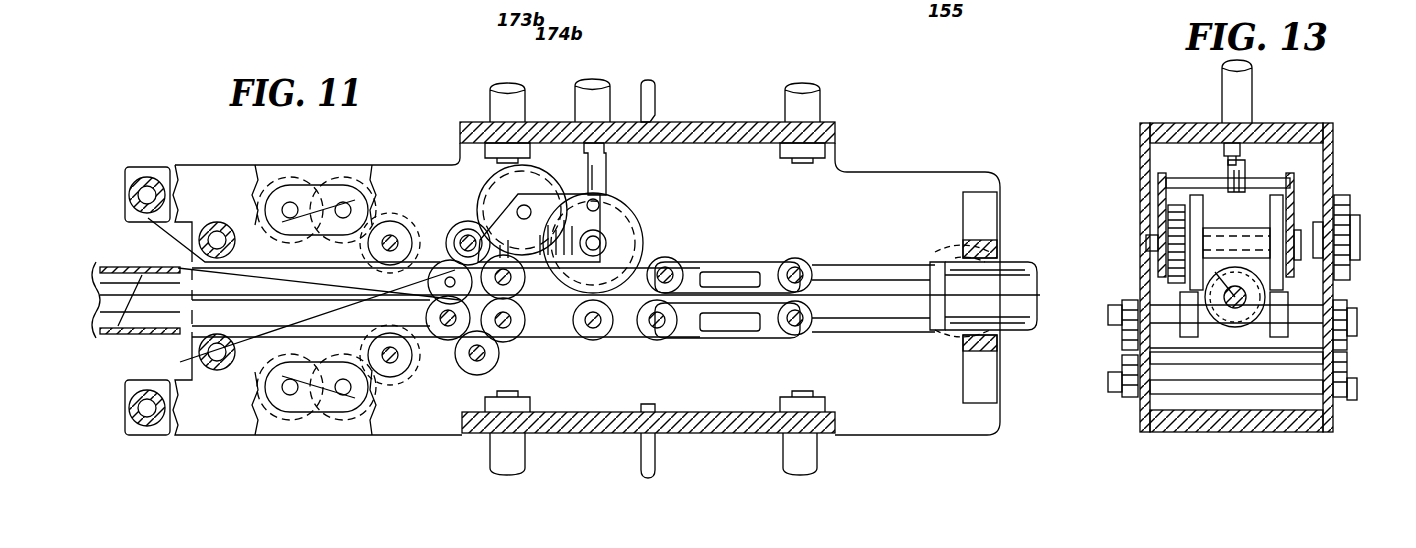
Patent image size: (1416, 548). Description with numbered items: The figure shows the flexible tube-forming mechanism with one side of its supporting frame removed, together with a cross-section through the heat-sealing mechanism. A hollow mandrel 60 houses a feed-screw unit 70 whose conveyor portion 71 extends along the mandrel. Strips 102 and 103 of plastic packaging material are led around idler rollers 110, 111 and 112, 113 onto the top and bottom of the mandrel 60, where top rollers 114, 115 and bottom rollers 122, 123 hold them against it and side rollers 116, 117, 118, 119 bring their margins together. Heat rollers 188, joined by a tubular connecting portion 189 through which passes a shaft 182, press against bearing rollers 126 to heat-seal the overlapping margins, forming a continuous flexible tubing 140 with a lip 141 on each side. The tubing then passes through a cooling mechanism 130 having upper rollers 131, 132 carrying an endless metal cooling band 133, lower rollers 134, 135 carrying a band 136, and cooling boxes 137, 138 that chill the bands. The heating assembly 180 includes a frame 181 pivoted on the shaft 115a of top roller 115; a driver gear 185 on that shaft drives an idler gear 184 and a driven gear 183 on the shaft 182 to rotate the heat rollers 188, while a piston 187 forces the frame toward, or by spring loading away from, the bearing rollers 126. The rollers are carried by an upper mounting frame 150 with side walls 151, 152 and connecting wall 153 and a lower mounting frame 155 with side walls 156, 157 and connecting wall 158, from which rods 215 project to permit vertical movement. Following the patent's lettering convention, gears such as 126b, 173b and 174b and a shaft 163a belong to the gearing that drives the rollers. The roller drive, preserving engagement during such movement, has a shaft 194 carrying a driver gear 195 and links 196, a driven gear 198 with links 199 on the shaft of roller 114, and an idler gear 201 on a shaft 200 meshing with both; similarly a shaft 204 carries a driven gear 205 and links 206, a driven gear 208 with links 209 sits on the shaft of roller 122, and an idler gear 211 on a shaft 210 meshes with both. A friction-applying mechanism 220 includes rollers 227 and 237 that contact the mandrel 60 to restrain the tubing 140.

In FIG. 11, the mandrel 60 is at (112, 266).
In FIG. 13, the mandrel 60 is at (1240, 327).
In FIG. 11, the feed-screw unit 70 is at (106, 334).
In FIG. 13, the feed-screw unit 70 is at (1248, 292).
In FIG. 11, the conveyor portion 71 is at (110, 268).
In FIG. 11, the strip 102 is at (180, 240).
In FIG. 11, the strip 103 is at (185, 340).
In FIG. 11, the first idler roller 110 is at (147, 177).
In FIG. 11, the second idler roller 111 is at (218, 222).
In FIG. 11, the idler roller 112 is at (128, 410).
In FIG. 13, the idler roller 112 is at (1240, 390).
In FIG. 11, the idler roller 113 is at (222, 370).
In FIG. 13, the idler roller 113 is at (1280, 365).
In FIG. 11, the top roller 114 is at (428, 280).
In FIG. 11, the top roller 115 is at (462, 240).
In FIG. 11, the shaft 115a is at (486, 240).
In FIG. 11, the side roller 116 is at (430, 312).
In FIG. 11, the side roller 117 is at (440, 318).
In FIG. 11, the side roller 118 is at (515, 285).
In FIG. 11, the side roller 119 is at (510, 338).
In FIG. 11, the bottom roller 122 is at (411, 402).
In FIG. 11, the bottom roller 123 is at (496, 358).
In FIG. 11, the bearing roller 126 is at (588, 340).
In FIG. 13, the bearing roller 126 is at (1296, 300).
In FIG. 13, the bearing roller gear 126b is at (1128, 302).
In FIG. 11, the cooling mechanism 130 is at (750, 250).
In FIG. 11, the roller 131 is at (668, 258).
In FIG. 11, the roller 132 is at (795, 258).
In FIG. 11, the endless metal cooling band 133 is at (826, 281).
In FIG. 11, the roller 134 is at (657, 340).
In FIG. 11, the roller 135 is at (795, 335).
In FIG. 11, the endless metal cooling band 136 is at (760, 340).
In FIG. 11, the cooling box 137 is at (732, 262).
In FIG. 11, the cooling box 138 is at (722, 333).
In FIG. 11, the flexible tubing 140 is at (912, 332).
In FIG. 11, the lip 141 is at (895, 268).
In FIG. 11, the upper mounting frame 150 is at (950, 172).
In FIG. 13, the upper mounting frame 150 is at (1334, 150).
In FIG. 13, the side wall 151 is at (1140, 162).
In FIG. 11, the side wall 152 is at (870, 178).
In FIG. 13, the side wall 152 is at (1333, 128).
In FIG. 11, the connecting wall 153 is at (836, 140).
In FIG. 13, the connecting wall 153 is at (1165, 128).
In FIG. 11, the lower mounting frame 155 is at (906, 440).
In FIG. 13, the lower mounting frame 155 is at (1138, 434).
In FIG. 13, the side wall 156 is at (1140, 418).
In FIG. 11, the side wall 157 is at (880, 420).
In FIG. 13, the side wall 157 is at (1333, 430).
In FIG. 11, the connecting wall 158 is at (655, 455).
In FIG. 13, the connecting wall 158 is at (1305, 428).
In FIG. 13, the idler gear shaft 163a is at (1340, 218).
In FIG. 13, the nut 173b is at (1124, 394).
In FIG. 13, the gear 174b is at (1126, 345).
In FIG. 11, the heating assembly 180 is at (642, 188).
In FIG. 13, the heating assembly 180 is at (1292, 165).
In FIG. 11, the frame 181 is at (548, 196).
In FIG. 13, the frame 181 is at (1295, 185).
In FIG. 13, the shaft 182 is at (1145, 240).
In FIG. 11, the driven gear 183 is at (628, 222).
In FIG. 13, the driven gear 183 is at (1158, 270).
In FIG. 11, the idler gear 184 is at (522, 180).
In FIG. 11, the driver gear 185 is at (468, 230).
In FIG. 11, the piston 187 is at (598, 150).
In FIG. 13, the piston 187 is at (1240, 150).
In FIG. 11, the heat roller 188 is at (618, 202).
In FIG. 13, the heat roller 188 is at (1222, 185).
In FIG. 13, the tubular connecting portion 189 is at (1258, 228).
In FIG. 11, the shaft 194 is at (290, 234).
In FIG. 11, the driver gear 195 is at (252, 185).
In FIG. 11, the links 196 is at (290, 190).
In FIG. 11, the driven gear 198 is at (360, 192).
In FIG. 11, the links 199 is at (343, 185).
In FIG. 11, the shaft 200 is at (376, 245).
In FIG. 11, the idler gear 201 is at (320, 196).
In FIG. 11, the shaft 204 is at (290, 366).
In FIG. 11, the driven gear 205 is at (268, 410).
In FIG. 11, the links 206 is at (310, 372).
In FIG. 11, the driven gear 208 is at (343, 366).
In FIG. 11, the links 209 is at (343, 414).
In FIG. 11, the shaft 210 is at (370, 355).
In FIG. 11, the idler gear 211 is at (326, 412).
In FIG. 11, the rods 215 is at (492, 102).
In FIG. 13, the rods 215 is at (1222, 94).
In FIG. 11, the friction-applying mechanism 220 is at (985, 190).
In FIG. 11, the second roller 227 is at (950, 252).
In FIG. 11, the second roller 237 is at (967, 375).